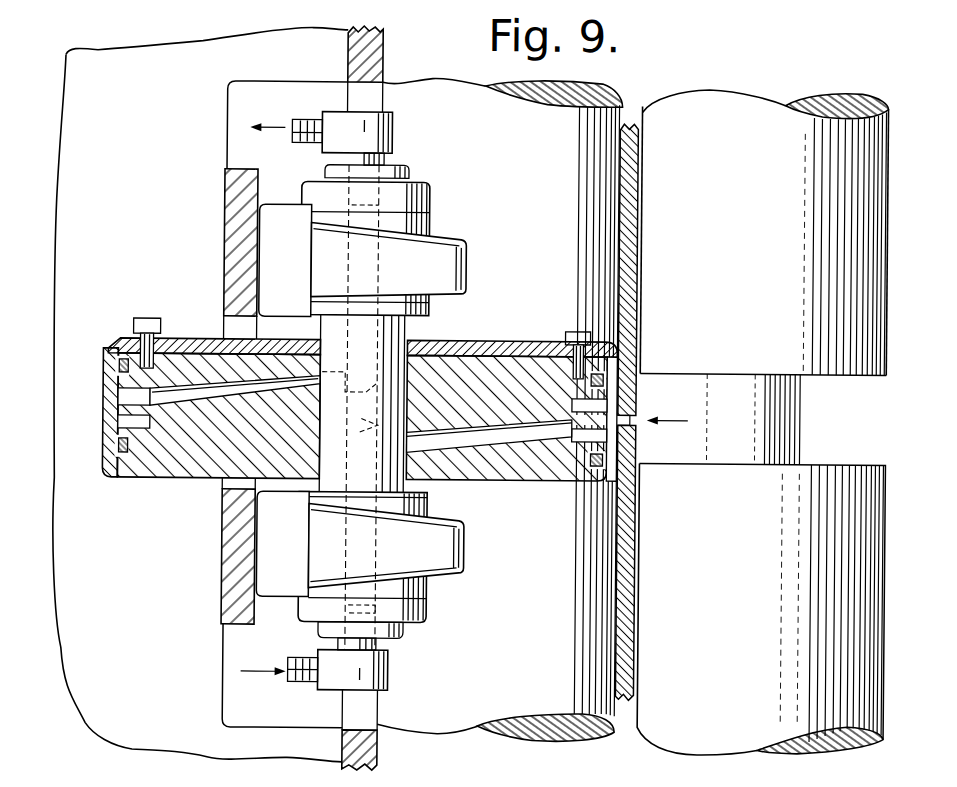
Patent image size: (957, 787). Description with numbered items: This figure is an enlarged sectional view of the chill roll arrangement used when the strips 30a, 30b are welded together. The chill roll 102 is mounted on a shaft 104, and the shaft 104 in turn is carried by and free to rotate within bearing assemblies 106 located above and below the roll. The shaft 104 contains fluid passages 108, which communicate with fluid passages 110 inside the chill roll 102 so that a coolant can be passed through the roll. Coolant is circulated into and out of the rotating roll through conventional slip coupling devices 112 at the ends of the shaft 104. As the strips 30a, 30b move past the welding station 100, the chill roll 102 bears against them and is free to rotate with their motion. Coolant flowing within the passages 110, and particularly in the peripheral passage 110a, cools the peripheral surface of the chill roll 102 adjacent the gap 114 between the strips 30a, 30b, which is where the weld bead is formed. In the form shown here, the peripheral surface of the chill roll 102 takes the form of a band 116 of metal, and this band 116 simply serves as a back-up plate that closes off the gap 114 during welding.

The strip 30a is at (625, 582).
The strip 30b is at (638, 168).
The welding station 100 is at (667, 383).
The chill roll 102 is at (524, 337).
The shaft 104 is at (392, 341).
The bearing assemblies 106 is at (462, 238).
The fluid passages 108 is at (384, 371).
The fluid passages 110 is at (196, 385).
The peripheral passage 110a is at (606, 380).
The slip coupling devices 112 is at (382, 137).
The gap 114 is at (634, 418).
The band 116 is at (103, 463).